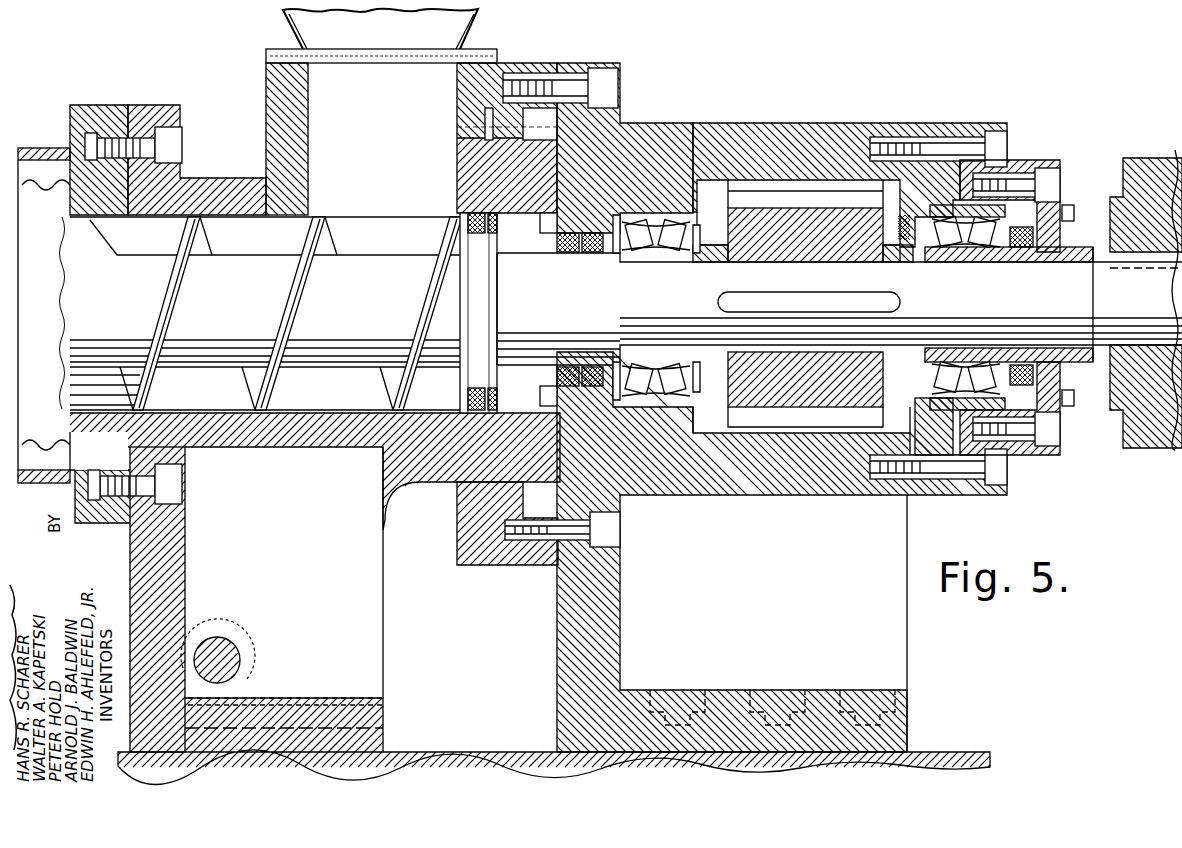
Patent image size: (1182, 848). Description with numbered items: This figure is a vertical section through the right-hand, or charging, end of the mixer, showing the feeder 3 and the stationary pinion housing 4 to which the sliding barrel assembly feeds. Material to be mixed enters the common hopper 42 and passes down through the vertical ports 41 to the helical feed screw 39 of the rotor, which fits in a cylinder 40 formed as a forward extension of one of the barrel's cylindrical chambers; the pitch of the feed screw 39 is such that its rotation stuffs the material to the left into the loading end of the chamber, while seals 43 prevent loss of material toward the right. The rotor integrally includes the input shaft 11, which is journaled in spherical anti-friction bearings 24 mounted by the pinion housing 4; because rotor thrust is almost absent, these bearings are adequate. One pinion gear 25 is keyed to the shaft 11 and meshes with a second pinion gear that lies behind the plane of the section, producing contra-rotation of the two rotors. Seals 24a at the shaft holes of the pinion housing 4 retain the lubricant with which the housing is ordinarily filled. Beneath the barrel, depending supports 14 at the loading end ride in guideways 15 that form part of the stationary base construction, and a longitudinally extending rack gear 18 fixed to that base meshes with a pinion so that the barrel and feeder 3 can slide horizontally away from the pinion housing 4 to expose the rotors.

The feeder 3 is at (255, 92).
The pinion housing 4 is at (793, 120).
The input shaft 11 is at (968, 305).
The depending supports 14 is at (186, 553).
The guideways 15 is at (463, 750).
The rack gear 18 is at (341, 697).
The spherical anti-friction bearings 24 is at (660, 212).
The seals 24a is at (568, 252).
The pinion gear 25 is at (803, 252).
The helical feed screw 39 is at (328, 220).
The cylinders 40 is at (227, 218).
The vertical ports 41 is at (312, 123).
The hopper 42 is at (456, 18).
The seals 43 is at (485, 232).